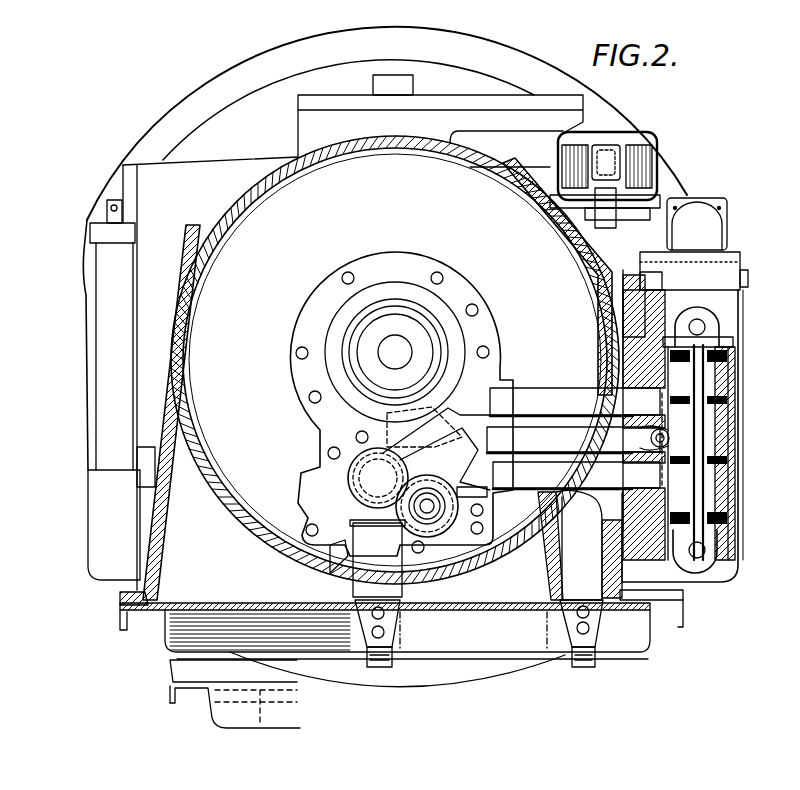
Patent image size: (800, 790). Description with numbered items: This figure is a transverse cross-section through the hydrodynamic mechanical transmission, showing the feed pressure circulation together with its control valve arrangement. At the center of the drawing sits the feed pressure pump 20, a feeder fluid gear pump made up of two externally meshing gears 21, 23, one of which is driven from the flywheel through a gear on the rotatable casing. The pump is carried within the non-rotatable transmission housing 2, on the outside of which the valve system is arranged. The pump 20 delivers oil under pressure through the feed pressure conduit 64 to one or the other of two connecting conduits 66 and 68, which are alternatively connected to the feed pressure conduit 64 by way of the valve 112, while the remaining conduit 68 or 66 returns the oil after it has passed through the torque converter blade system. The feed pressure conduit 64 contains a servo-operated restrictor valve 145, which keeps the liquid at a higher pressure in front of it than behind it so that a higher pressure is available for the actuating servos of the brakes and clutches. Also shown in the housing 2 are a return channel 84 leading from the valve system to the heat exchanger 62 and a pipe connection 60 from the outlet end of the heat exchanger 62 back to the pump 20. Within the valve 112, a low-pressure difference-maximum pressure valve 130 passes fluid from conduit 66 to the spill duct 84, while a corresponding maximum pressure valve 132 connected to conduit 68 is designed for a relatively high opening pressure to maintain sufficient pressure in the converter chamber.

The non-rotatable transmission housing 2 is at (252, 530).
The feed pressure pump 20 is at (322, 501).
The gear 21 is at (389, 489).
The gear 23 is at (428, 498).
The pipe connection 60 is at (389, 558).
The heat exchanger 62 is at (494, 643).
The feed pressure conduit 64 is at (565, 451).
The connecting conduit 66 is at (559, 486).
The connecting conduit 68 is at (570, 413).
The return channel 84 is at (592, 556).
The valve 112 is at (731, 431).
The low-pressure difference-maximum pressure valve 130 is at (737, 482).
The maximum pressure valve 132 is at (736, 385).
The servo-operated restrictor valve 145 is at (650, 438).